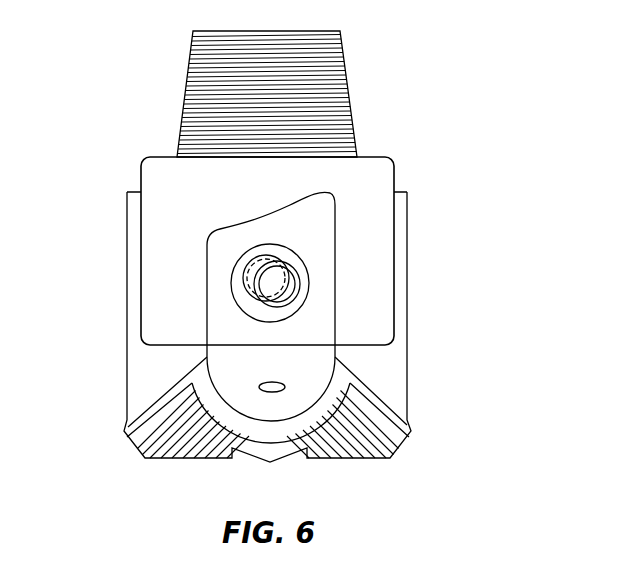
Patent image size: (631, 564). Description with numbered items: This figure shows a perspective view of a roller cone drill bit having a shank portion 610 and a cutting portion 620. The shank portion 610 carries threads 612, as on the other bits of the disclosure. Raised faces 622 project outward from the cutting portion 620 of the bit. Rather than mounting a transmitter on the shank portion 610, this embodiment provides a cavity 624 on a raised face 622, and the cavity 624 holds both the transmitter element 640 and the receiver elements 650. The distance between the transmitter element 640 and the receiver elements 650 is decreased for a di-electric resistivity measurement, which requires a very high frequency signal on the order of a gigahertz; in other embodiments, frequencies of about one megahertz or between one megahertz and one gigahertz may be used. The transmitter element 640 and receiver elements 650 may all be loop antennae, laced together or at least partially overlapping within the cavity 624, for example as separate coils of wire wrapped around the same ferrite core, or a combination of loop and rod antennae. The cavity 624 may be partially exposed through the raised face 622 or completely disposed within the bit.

The shank portion 610 is at (460, 32).
The threads 612 is at (185, 90).
The cutting portion 620 is at (462, 152).
The raised face 622 is at (208, 328).
The cavity 624 is at (229, 275).
The transmitter element 640 is at (252, 253).
The receiver elements 650 is at (303, 282).